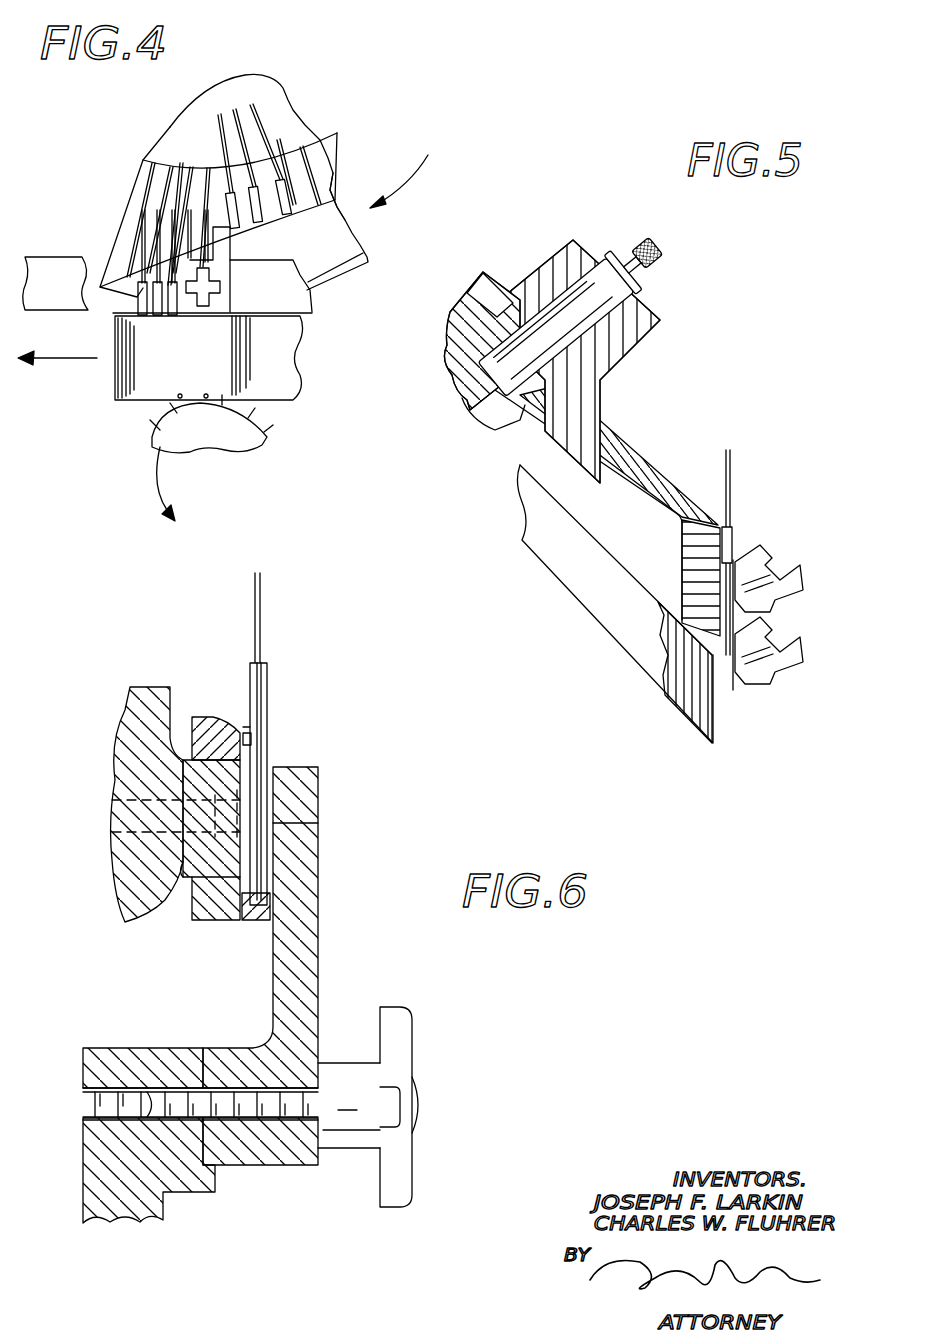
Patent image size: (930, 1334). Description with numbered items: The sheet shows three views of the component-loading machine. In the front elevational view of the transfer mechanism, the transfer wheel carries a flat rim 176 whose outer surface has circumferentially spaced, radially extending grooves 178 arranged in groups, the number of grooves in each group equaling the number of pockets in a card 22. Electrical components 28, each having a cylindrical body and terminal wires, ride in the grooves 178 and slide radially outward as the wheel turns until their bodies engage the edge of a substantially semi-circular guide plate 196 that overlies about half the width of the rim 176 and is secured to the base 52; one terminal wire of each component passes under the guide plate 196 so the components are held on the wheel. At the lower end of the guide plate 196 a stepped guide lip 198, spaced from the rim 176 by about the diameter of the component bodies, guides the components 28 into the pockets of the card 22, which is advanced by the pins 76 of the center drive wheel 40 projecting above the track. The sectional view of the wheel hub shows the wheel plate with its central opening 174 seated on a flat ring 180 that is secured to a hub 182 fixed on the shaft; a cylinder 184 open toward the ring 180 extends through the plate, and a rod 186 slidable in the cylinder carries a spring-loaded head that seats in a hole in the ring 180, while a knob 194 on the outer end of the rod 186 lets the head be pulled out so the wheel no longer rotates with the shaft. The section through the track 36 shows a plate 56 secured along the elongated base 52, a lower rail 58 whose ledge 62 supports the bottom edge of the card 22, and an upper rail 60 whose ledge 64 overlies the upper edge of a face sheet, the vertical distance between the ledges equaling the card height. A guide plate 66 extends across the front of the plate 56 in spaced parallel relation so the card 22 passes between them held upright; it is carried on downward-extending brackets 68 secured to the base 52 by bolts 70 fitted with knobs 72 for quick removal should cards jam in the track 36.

In FIG. 4, the card 22 is at (123, 367).
In FIG. 4, the electrical components 28 is at (140, 267).
In FIG. 5, the electrical components 28 is at (735, 527).
In FIG. 6, the electrical components 28 is at (260, 695).
In FIG. 6, the track 36 is at (208, 690).
In FIG. 4, the center drive wheel 40 is at (189, 432).
In FIG. 6, the base 52 is at (128, 727).
In FIG. 6, the plate 56 is at (190, 863).
In FIG. 6, the lower rail 58 is at (215, 893).
In FIG. 6, the upper rail 60 is at (215, 717).
In FIG. 6, the ledge 62 is at (262, 912).
In FIG. 6, the ledge 64 is at (248, 725).
In FIG. 6, the guide plate 66 is at (312, 782).
In FIG. 6, the brackets 68 is at (292, 958).
In FIG. 6, the bolts 70 is at (273, 1110).
In FIG. 6, the knobs 72 is at (403, 1060).
In FIG. 4, the pins 76 is at (147, 428).
In FIG. 5, the central opening 174 is at (575, 385).
In FIG. 4, the rim 176 is at (307, 153).
In FIG. 4, the grooves 178 is at (180, 163).
In FIG. 5, the ring 180 is at (605, 472).
In FIG. 5, the hub 182 is at (640, 327).
In FIG. 5, the cylinder 184 is at (637, 287).
In FIG. 5, the rod 186 is at (625, 260).
In FIG. 5, the knob 194 is at (650, 245).
In FIG. 4, the guide plate 196 is at (325, 208).
In FIG. 5, the guide plate 196 is at (735, 567).
In FIG. 4, the guide lip 198 is at (262, 293).